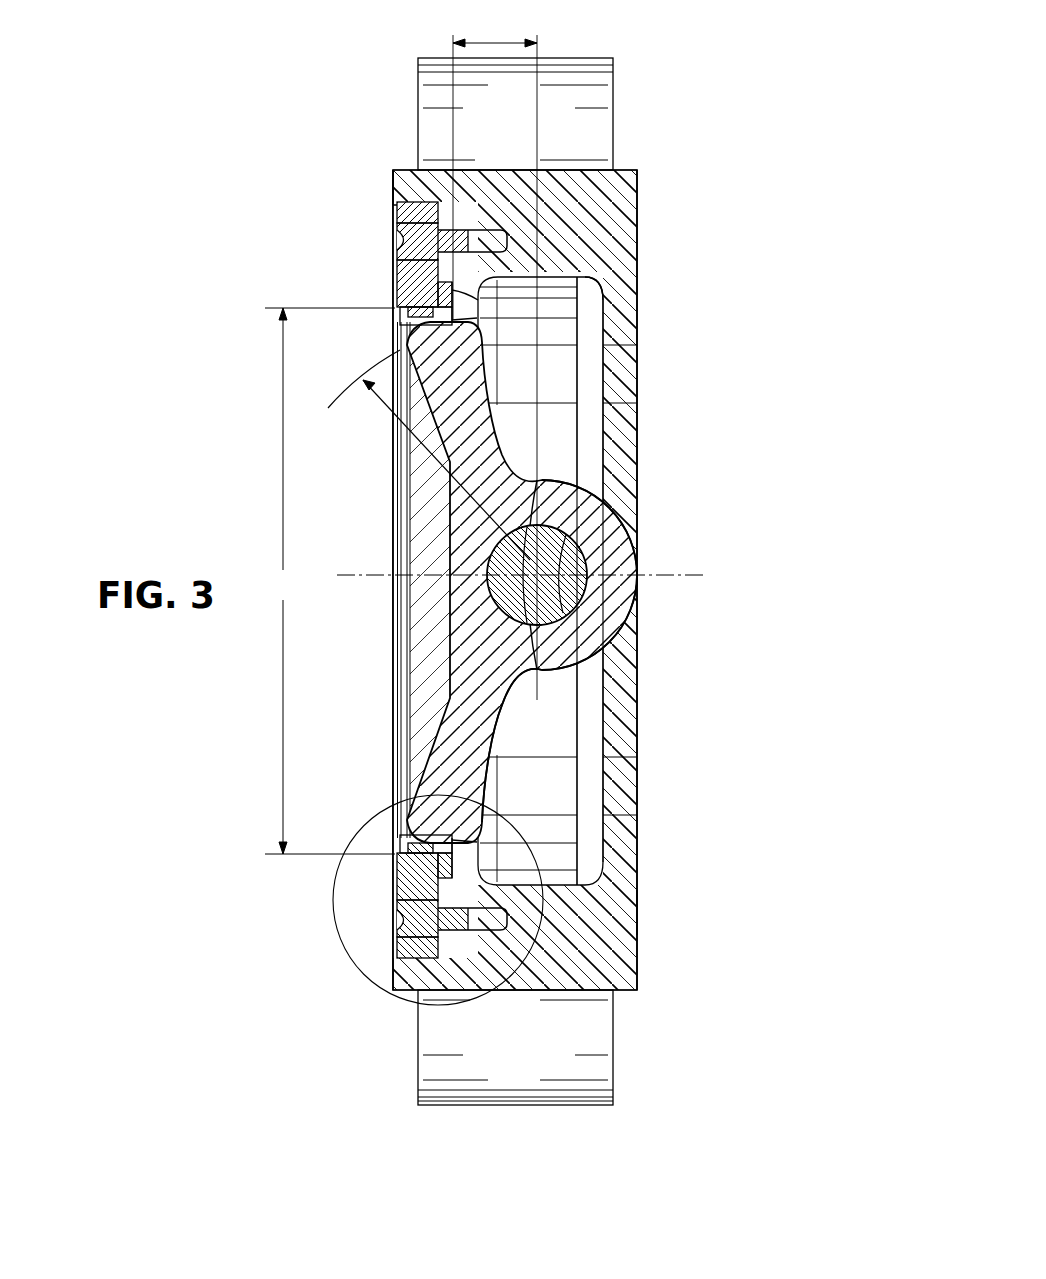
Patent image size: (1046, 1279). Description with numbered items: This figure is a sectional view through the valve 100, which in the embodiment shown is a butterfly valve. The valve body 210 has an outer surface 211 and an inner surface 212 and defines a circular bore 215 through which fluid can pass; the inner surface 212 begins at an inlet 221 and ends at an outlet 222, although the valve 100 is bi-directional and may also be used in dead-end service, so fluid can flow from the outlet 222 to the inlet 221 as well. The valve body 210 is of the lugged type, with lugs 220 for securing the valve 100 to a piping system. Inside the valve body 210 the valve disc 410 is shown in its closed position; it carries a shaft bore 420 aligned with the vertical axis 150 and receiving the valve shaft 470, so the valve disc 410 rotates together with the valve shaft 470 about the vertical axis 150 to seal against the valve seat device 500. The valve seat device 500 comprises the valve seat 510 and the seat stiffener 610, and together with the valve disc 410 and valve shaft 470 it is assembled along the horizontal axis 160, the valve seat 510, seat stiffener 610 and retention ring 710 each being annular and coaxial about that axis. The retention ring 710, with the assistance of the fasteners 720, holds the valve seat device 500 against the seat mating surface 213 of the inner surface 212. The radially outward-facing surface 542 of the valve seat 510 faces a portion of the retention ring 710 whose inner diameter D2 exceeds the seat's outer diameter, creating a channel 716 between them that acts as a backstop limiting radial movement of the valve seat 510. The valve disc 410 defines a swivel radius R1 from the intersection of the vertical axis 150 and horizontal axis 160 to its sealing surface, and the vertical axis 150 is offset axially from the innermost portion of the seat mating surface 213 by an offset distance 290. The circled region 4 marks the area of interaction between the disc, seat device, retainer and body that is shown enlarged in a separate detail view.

The valve 100 is at (303, 56).
The offset distance 290 is at (485, 42).
The lugs 220 is at (613, 115).
The inlet 221 is at (393, 203).
The fasteners 720 is at (393, 235).
The retention ring 710 is at (393, 278).
The radially outward-facing surface 542 is at (393, 287).
The outlet 222 is at (637, 300).
The valve seat device 500 is at (452, 292).
The bore 215 is at (472, 316).
The valve shaft 470 is at (660, 492).
The horizontal axis 160 is at (360, 573).
The shaft bore 420 is at (548, 620).
The vertical axis 150 is at (548, 663).
The valve disc 410 is at (500, 672).
The seat stiffener 610 is at (440, 813).
The valve seat 510 is at (455, 833).
The inner surface 212 is at (557, 812).
The outer surface 211 is at (654, 916).
The valve body 210 is at (626, 932).
The channel 716 is at (430, 805).
The seat mating surface 213 is at (393, 948).
The detail view circle 4 is at (370, 972).
The swivel radius R1 is at (429, 455).
The inner diameter D2 is at (330, 581).